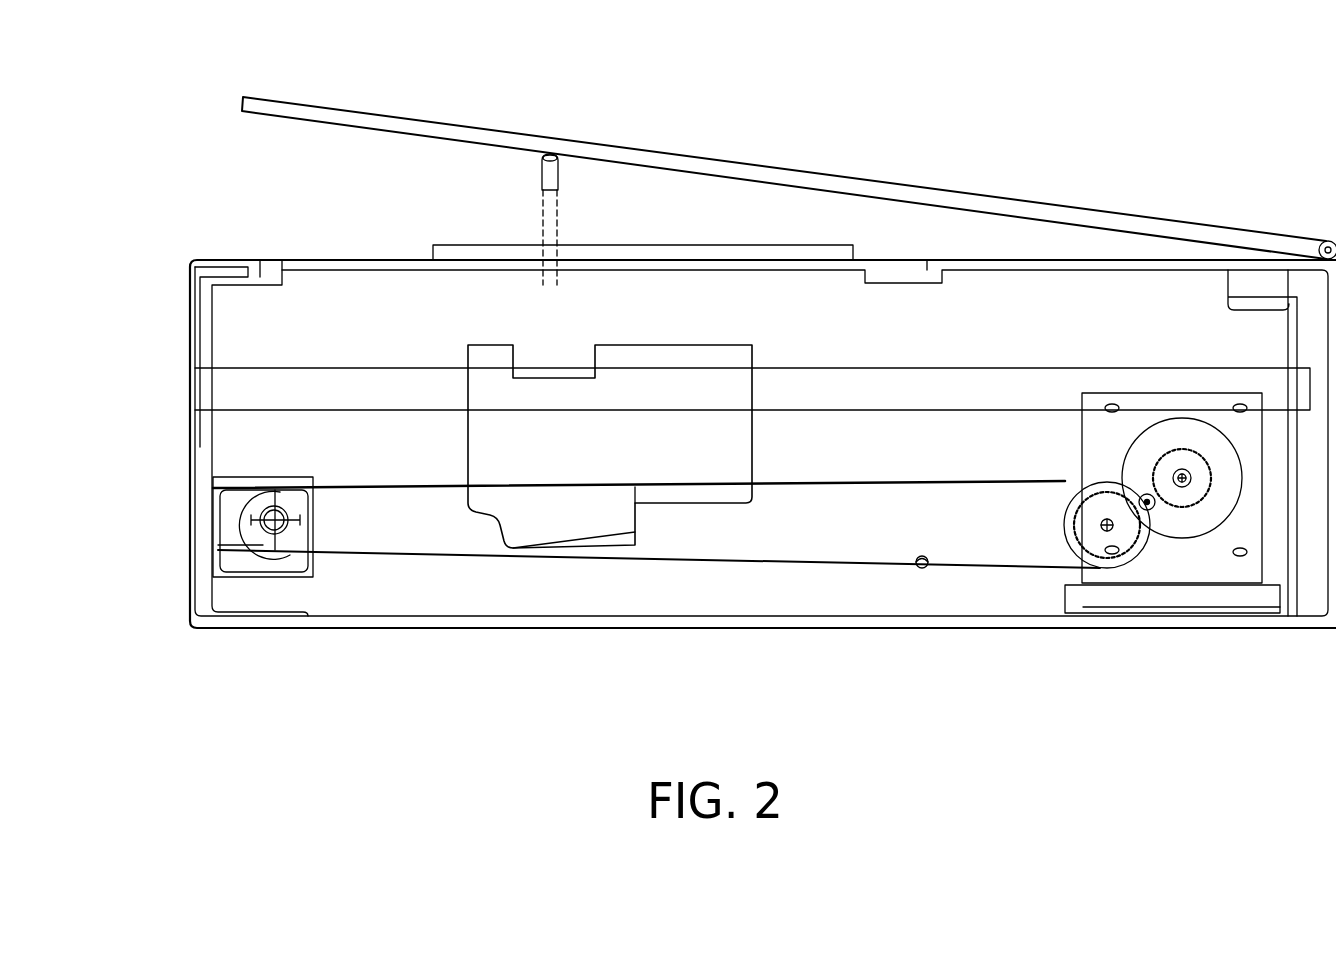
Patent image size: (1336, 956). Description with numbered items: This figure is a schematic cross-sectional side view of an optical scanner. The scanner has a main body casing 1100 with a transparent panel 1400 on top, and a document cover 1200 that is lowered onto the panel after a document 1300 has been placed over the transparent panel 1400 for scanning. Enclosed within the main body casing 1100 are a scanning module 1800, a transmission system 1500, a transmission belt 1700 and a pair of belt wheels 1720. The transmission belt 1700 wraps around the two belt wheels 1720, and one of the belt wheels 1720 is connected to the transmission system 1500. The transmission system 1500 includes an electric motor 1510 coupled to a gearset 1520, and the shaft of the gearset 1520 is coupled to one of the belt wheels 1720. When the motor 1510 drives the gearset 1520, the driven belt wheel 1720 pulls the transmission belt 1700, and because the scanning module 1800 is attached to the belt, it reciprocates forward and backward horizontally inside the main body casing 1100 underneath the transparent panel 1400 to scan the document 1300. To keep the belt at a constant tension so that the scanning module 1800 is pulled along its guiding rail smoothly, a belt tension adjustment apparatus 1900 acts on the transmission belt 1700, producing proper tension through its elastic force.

The main body casing 1100 is at (195, 367).
The document cover 1200 is at (521, 142).
The document 1300 is at (483, 250).
The transparent panel 1400 is at (363, 263).
The transmission system 1500 is at (1172, 570).
The electric motor 1510 is at (1213, 560).
The gearset 1520 is at (1207, 503).
The transmission belt 1700 is at (815, 563).
The belt wheels 1720 is at (293, 545).
The scanning module 1800 is at (492, 448).
The belt tension adjustment apparatus 1900 is at (922, 569).